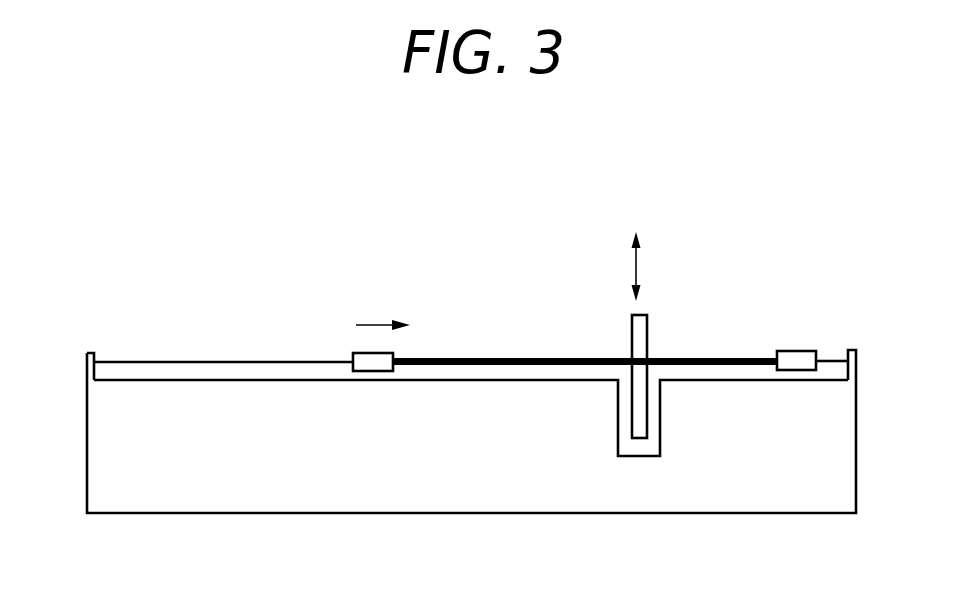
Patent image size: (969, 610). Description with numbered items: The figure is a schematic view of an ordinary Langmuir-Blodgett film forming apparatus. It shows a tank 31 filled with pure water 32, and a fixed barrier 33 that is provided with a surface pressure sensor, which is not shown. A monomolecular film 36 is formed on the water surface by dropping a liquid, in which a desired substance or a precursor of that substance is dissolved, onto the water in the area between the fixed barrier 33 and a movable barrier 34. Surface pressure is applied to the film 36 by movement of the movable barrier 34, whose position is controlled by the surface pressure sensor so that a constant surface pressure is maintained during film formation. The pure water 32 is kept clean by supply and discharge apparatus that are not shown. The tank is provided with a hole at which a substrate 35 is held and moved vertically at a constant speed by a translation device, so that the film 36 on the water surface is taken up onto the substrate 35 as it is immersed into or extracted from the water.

The tank 31 is at (97, 428).
The pure water 32 is at (195, 368).
The fixed barrier 33 is at (802, 350).
The movable barrier 34 is at (365, 353).
The substrate 35 is at (647, 333).
The monomolecular film 36 is at (510, 358).